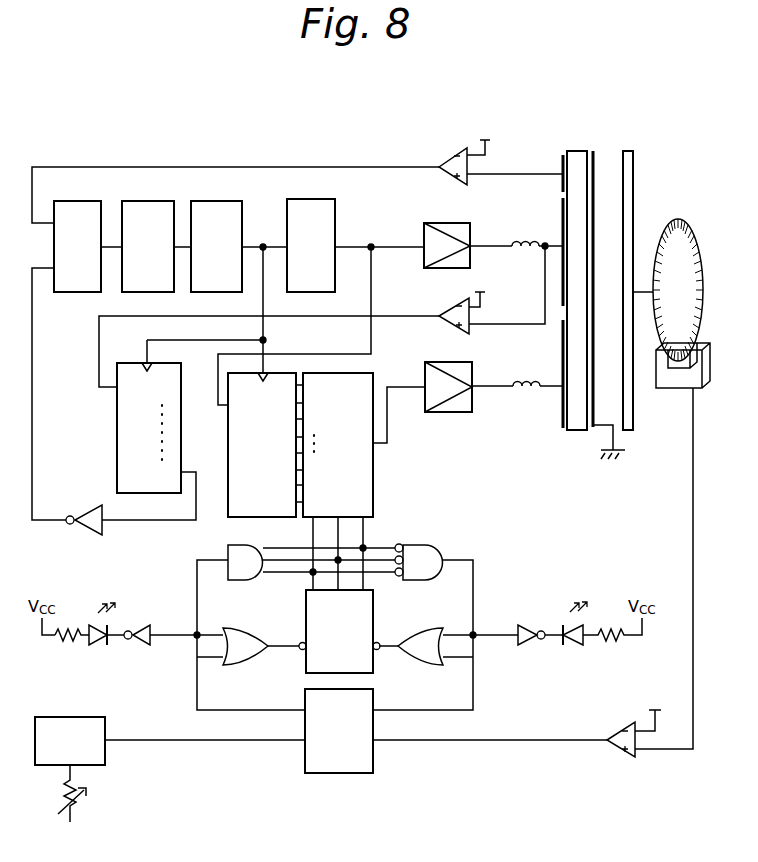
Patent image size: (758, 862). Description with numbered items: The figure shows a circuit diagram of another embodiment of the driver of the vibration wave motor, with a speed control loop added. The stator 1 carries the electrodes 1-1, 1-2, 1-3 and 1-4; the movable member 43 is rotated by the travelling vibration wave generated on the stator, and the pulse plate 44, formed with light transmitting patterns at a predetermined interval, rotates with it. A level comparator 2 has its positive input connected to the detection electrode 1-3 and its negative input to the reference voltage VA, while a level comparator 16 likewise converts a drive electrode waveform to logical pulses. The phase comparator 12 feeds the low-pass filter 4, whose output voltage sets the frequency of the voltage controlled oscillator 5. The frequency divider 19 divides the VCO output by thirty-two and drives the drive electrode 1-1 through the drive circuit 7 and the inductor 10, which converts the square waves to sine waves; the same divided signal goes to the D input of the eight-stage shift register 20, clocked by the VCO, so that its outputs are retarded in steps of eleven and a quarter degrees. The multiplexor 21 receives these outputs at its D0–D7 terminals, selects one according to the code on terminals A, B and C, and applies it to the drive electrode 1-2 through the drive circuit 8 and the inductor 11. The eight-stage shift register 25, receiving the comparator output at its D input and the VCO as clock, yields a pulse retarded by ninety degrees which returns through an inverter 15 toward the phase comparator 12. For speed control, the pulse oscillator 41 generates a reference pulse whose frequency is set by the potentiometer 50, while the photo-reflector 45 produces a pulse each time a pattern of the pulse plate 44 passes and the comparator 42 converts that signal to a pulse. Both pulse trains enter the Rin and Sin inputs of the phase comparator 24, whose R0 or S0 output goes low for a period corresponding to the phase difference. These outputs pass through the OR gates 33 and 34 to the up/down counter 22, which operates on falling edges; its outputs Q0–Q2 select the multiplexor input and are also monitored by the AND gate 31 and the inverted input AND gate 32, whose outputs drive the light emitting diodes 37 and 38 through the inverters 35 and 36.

The phase comparator 12 is at (58, 201).
The low-pass filter 4 is at (140, 201).
The voltage controlled oscillator 5 is at (212, 201).
The frequency divider 19 is at (295, 201).
The level comparator 2 is at (434, 160).
The drive circuit 7 is at (427, 227).
The inductor 10 is at (512, 242).
The level comparator 16 is at (439, 310).
The drive circuit 8 is at (433, 364).
The inductor 11 is at (518, 384).
The stator 1 is at (576, 151).
The detection electrode 1-3 is at (563, 173).
The drive electrode 1-1 is at (561, 244).
The drive electrode 1-2 is at (563, 386).
The electrode 1-4 is at (590, 440).
The movable member 43 is at (630, 151).
The pulse plate 44 is at (677, 215).
The photo-reflector 45 is at (670, 395).
The eight-stage shift register 25 is at (113, 405).
The eight-stage shift register 20 is at (224, 457).
The multiplexor 21 is at (373, 453).
The inverter 15 is at (90, 512).
The AND gate 31 is at (243, 582).
The inverted input AND gate 32 is at (428, 582).
The up/down counter 22 is at (373, 615).
The OR gate 33 is at (242, 667).
The OR gate 34 is at (430, 667).
The phase comparator 24 is at (373, 698).
The light emitting diode 37 is at (95, 648).
The inverter 35 is at (143, 648).
The pulse oscillator 41 is at (105, 724).
The potentiometer 50 is at (82, 800).
The inverter 36 is at (528, 648).
The light emitting diode 38 is at (576, 648).
The comparator 42 is at (615, 754).